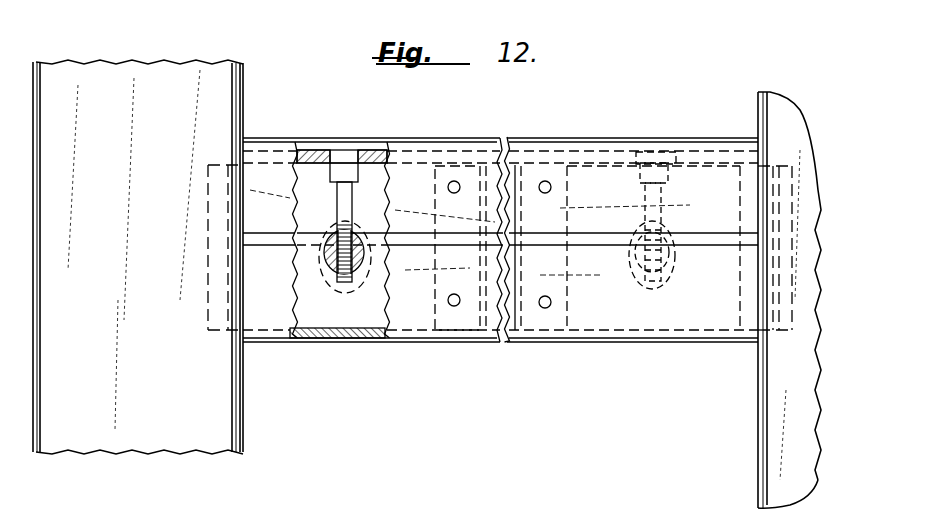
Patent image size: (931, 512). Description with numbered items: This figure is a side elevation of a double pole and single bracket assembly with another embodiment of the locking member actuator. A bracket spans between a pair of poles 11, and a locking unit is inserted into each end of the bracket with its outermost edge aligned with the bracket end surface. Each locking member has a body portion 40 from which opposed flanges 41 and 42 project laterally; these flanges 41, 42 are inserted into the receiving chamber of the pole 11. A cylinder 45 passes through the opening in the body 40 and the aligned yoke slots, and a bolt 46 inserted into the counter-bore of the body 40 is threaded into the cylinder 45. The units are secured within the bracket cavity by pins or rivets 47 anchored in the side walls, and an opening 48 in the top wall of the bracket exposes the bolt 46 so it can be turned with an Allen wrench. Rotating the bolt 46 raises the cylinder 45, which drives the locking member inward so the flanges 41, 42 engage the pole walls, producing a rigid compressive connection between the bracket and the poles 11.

The pole 11 is at (802, 376).
The body portion 40 is at (300, 322).
The flange 41 is at (212, 240).
The flange 42 is at (782, 185).
The cylinder 45 is at (330, 264).
The bolt 46 is at (334, 190).
The pins or rivets 47 is at (454, 306).
The opening 48 is at (334, 150).